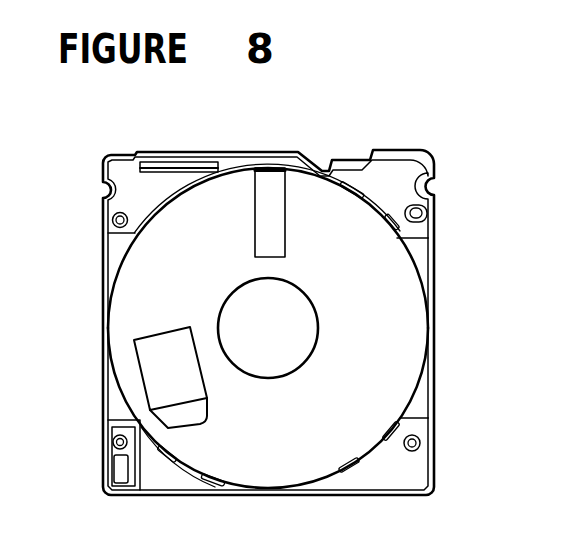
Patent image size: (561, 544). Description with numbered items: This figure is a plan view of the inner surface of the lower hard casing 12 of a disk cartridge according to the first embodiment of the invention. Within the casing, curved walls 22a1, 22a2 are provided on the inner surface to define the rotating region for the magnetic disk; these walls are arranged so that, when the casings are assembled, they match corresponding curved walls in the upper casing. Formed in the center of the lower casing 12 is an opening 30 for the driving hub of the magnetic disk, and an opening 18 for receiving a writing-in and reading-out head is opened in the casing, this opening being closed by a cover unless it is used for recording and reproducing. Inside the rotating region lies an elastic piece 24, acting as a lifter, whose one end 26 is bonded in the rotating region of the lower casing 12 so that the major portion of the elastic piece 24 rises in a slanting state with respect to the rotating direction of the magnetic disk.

The lower hard casing 12 is at (432, 292).
The opening for receiving a writing-in and reading-out head 18 is at (278, 223).
The curved wall 22a1 is at (178, 202).
The curved wall 22a2 is at (302, 482).
The elastic piece 24 is at (162, 360).
The one end of the elastic piece 26 is at (183, 413).
The opening for a driving hub 30 is at (307, 320).